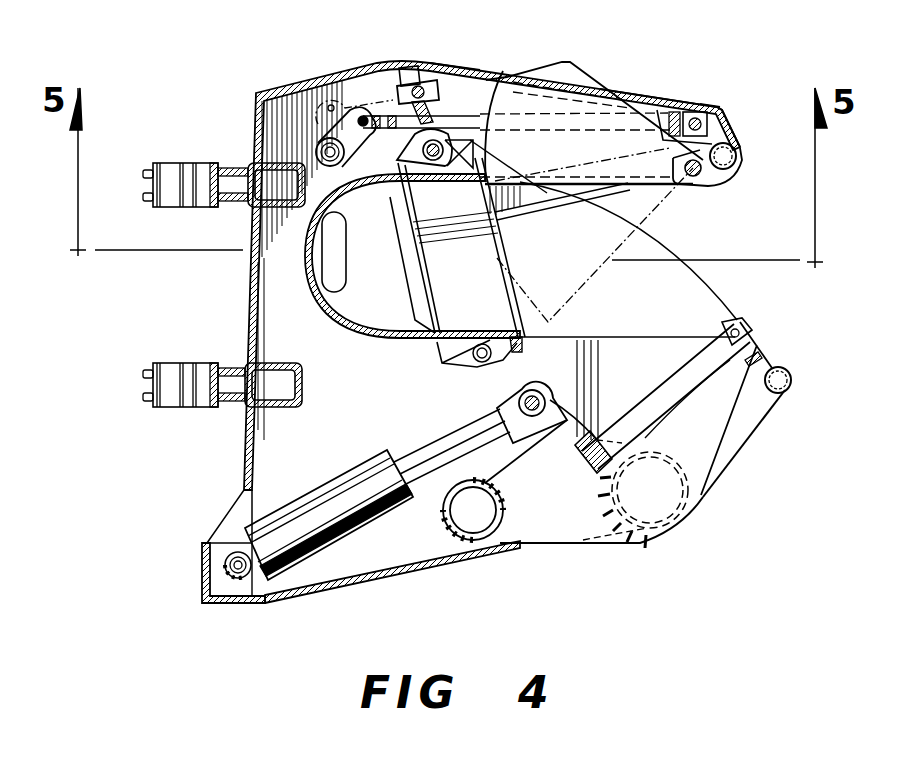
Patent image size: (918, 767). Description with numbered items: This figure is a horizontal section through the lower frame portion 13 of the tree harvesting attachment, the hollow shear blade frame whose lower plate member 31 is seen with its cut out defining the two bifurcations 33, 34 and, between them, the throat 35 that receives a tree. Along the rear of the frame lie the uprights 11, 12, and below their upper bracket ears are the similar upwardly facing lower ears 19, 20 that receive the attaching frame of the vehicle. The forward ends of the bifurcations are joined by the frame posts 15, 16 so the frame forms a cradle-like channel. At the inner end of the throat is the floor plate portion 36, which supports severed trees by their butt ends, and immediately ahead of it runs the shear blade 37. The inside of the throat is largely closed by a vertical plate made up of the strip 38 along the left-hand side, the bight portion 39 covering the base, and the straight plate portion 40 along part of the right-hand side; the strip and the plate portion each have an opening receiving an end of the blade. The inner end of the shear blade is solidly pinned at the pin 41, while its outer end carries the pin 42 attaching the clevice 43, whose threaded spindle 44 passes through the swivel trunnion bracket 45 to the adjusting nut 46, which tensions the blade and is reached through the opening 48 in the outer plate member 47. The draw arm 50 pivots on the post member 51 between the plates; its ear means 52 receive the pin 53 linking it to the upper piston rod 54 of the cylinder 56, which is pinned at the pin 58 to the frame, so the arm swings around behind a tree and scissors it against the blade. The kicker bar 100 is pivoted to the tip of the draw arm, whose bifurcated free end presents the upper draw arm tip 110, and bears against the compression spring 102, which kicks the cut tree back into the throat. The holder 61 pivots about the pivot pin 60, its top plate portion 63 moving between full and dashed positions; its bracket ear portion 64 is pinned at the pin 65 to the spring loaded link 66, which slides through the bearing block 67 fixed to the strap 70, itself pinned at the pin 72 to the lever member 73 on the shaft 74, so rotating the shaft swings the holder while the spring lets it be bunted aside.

The upright 11 is at (300, 372).
The upright 12 is at (267, 157).
The lower frame portion 13 is at (509, 563).
The frame post 15 is at (781, 366).
The frame post 16 is at (734, 162).
The upper coupler 19 is at (177, 167).
The lower coupler 20 is at (168, 368).
The lower plate member 31 is at (386, 402).
The bifurcation 33 is at (716, 103).
The bifurcation 34 is at (727, 468).
The throat 35 is at (702, 238).
The floor plate portion 36 is at (392, 274).
The shear blade 37 is at (477, 271).
The strip 38 is at (428, 178).
The bight portion 39 is at (313, 277).
The straight plate portion 40 is at (447, 334).
The pin 41 is at (480, 357).
The pin 42 is at (438, 140).
The clevice 43 is at (412, 140).
The threaded spindle 44 is at (414, 63).
The swivel trunnion bracket 45 is at (398, 96).
The adjusting nut 46 is at (402, 68).
The outer plate member 47 is at (505, 76).
The opening 48 is at (448, 70).
The draw arm 50 is at (619, 548).
The post member 51 is at (446, 530).
The ear means 52 is at (549, 413).
The pin 53 is at (529, 395).
The upper piston rod 54 is at (453, 443).
The cylinder 56 is at (333, 491).
The pin 58 is at (234, 580).
The pivot pin 60 is at (697, 176).
The holder 61 is at (592, 72).
The top plate portion 63 is at (618, 107).
The bracket ear portion 64 is at (710, 138).
The pin 65 is at (704, 122).
The spring loaded link 66 is at (689, 105).
The bearing block 67 is at (674, 110).
The strap 70 is at (488, 118).
The pin 72 is at (352, 99).
The lever member 73 is at (325, 129).
The shaft 74 is at (329, 166).
The kicker bar 100 is at (662, 401).
The compression spring 102 is at (623, 500).
The upper draw arm tip 110 is at (732, 420).